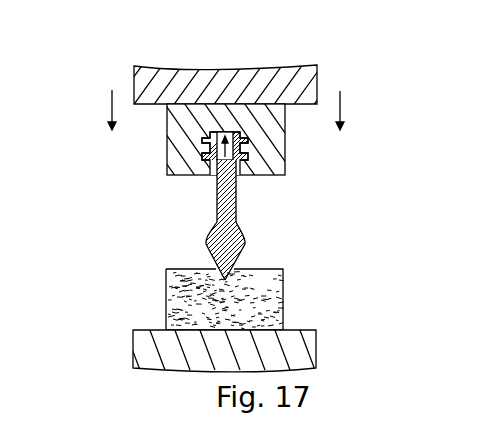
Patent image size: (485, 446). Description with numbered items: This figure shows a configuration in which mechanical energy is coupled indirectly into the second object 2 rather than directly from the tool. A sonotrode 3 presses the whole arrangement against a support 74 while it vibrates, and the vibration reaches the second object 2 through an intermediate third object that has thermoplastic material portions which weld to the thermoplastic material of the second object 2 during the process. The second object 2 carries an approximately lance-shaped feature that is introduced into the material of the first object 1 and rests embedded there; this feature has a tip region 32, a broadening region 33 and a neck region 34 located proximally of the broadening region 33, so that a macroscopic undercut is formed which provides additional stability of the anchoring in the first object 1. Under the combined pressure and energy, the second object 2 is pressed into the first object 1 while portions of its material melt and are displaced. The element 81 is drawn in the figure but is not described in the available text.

The first object 1 is at (166, 294).
The second object 2 is at (227, 211).
The sonotrode 3 is at (267, 80).
The tip region 32 is at (210, 254).
The broadening region 33 is at (247, 238).
The neck region 34 is at (217, 190).
The support 74 is at (140, 348).
The latching teeth 81 is at (203, 152).